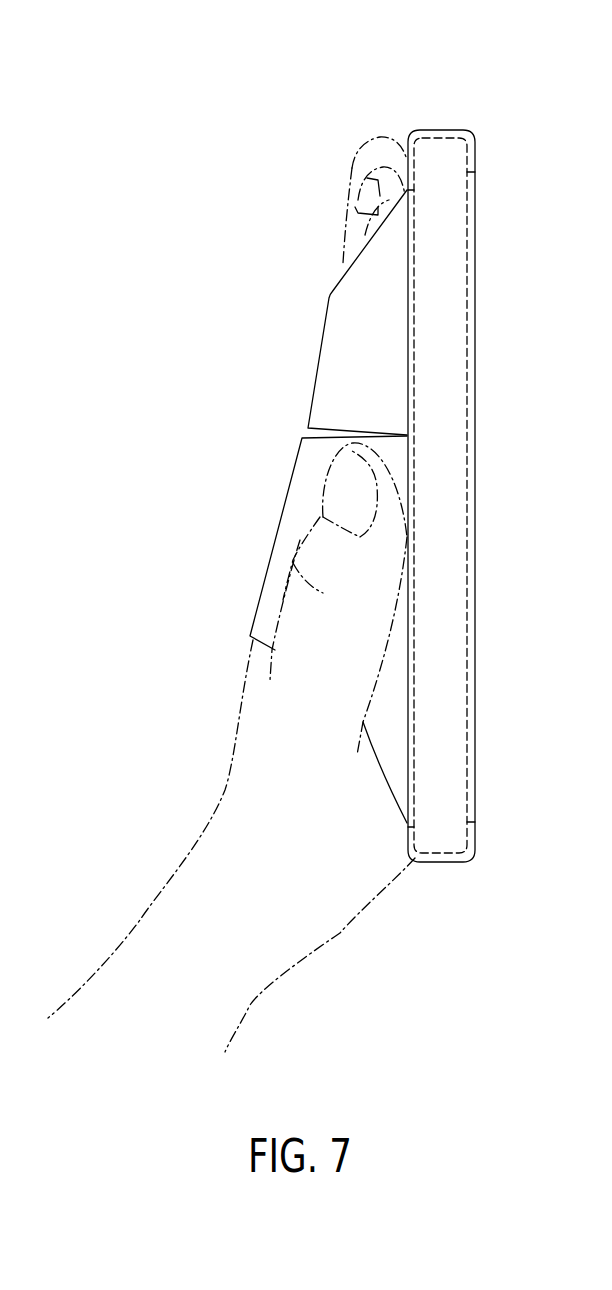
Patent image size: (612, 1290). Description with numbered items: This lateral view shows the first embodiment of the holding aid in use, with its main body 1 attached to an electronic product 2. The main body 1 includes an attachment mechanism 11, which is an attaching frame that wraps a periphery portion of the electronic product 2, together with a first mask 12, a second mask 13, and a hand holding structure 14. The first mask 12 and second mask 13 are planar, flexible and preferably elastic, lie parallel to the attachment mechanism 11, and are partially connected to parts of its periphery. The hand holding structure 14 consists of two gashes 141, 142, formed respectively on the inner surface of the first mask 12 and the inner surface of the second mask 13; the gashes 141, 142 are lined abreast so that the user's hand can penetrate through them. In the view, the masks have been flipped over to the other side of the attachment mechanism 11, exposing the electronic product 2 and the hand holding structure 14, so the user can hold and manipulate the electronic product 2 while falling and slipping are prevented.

The main body 1 is at (474, 479).
The electronic product 2 is at (450, 422).
The attachment mechanism 11 is at (475, 838).
The first mask 12 is at (370, 240).
The second mask 13 is at (403, 785).
The hand holding structure 14 is at (255, 420).
The gash 141 is at (330, 290).
The gash 142 is at (282, 543).